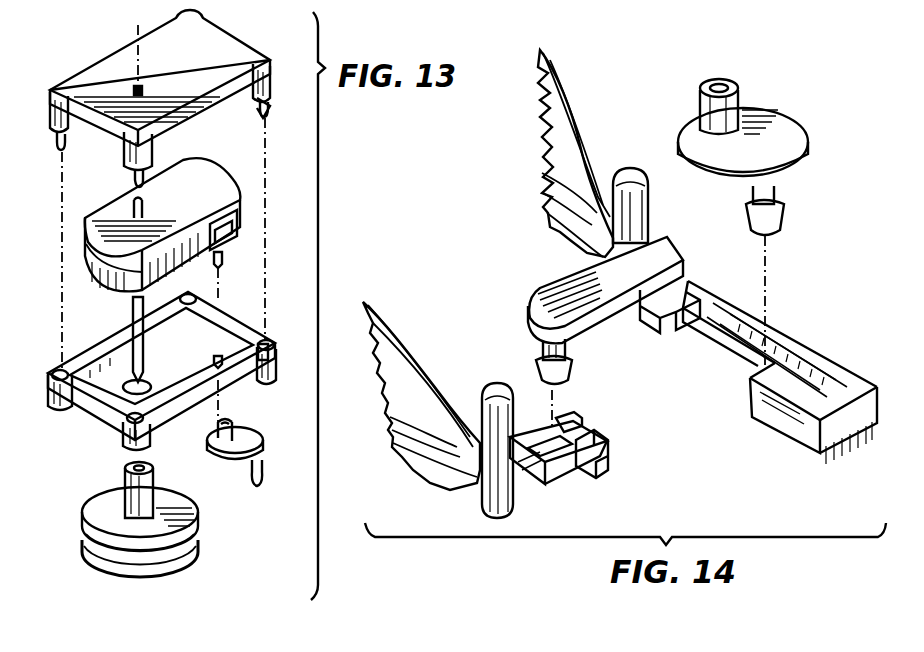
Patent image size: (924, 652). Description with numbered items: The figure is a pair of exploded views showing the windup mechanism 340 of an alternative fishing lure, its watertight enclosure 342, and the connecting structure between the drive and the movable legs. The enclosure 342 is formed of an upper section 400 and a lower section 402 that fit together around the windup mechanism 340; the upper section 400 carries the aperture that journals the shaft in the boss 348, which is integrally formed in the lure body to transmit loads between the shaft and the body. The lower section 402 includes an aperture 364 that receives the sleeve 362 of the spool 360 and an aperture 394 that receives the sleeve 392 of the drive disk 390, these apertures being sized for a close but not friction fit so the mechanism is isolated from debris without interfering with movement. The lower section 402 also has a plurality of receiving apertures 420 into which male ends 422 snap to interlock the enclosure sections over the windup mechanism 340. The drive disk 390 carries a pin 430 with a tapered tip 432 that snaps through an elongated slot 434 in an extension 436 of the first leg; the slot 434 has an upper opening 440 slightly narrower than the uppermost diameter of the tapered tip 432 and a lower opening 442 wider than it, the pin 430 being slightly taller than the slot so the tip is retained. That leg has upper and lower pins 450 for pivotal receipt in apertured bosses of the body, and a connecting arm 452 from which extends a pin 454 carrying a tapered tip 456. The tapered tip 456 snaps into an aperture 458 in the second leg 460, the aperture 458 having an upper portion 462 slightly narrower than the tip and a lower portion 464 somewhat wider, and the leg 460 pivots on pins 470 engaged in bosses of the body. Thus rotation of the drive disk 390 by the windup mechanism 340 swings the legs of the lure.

In FIG. 13, the windup mechanism 340 is at (225, 178).
In FIG. 13, the water tight enclosure 342 is at (250, 16).
In FIG. 13, the boss 348 is at (140, 88).
In FIG. 13, the spool 360 is at (200, 552).
In FIG. 13, the sleeve 362 is at (160, 484).
In FIG. 13, the aperture 364 is at (142, 380).
In FIG. 13, the drive disk 390 is at (276, 440).
In FIG. 14, the drive disk 390 is at (780, 120).
In FIG. 13, the sleeve 392 is at (220, 434).
In FIG. 13, the aperture 394 is at (234, 340).
In FIG. 13, the upper section 400 is at (95, 80).
In FIG. 13, the lower section 402 is at (90, 412).
In FIG. 13, the receiving apertures 420 is at (278, 352).
In FIG. 13, the male ends 422 is at (262, 112).
In FIG. 14, the pin 430 is at (778, 190).
In FIG. 14, the tapered tip 432 is at (778, 228).
In FIG. 14, the elongated slot 434 is at (772, 352).
In FIG. 14, the extension 436 is at (804, 462).
In FIG. 14, the upper opening 440 is at (708, 312).
In FIG. 14, the lower opening 442 is at (744, 360).
In FIG. 14, the pin 450 is at (638, 166).
In FIG. 14, the connecting arm 452 is at (560, 290).
In FIG. 14, the peg 454 is at (568, 350).
In FIG. 14, the tapered tip 456 is at (572, 374).
In FIG. 14, the aperture 458 is at (602, 442).
In FIG. 14, the leg 460 is at (408, 352).
In FIG. 14, the upper portion 462 is at (566, 420).
In FIG. 14, the lower portion 464 is at (576, 468).
In FIG. 14, the pins 470 is at (494, 384).